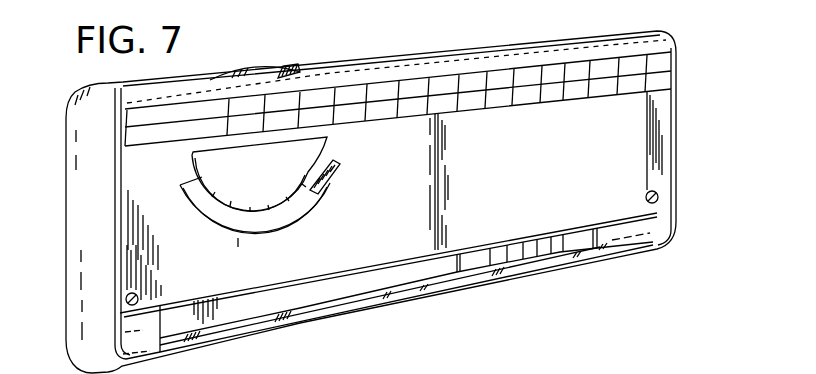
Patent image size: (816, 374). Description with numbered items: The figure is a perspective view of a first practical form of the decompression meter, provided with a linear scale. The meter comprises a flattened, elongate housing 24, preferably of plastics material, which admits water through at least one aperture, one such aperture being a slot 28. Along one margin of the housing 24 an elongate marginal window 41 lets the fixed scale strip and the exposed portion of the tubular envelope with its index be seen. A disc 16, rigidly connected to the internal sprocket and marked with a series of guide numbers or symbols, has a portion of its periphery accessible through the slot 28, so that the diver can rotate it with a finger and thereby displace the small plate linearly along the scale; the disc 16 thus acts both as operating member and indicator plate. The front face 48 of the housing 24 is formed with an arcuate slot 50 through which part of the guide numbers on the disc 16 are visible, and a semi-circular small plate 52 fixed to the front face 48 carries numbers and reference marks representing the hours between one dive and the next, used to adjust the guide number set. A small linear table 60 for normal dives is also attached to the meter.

The disc 16 is at (263, 72).
The housing 24 is at (63, 305).
The slot 28 is at (213, 80).
The elongate marginal window 41 is at (305, 317).
The front face 48 is at (670, 150).
The arcuate slot 50 is at (320, 197).
The semi-circular small plate 52 is at (313, 143).
The small linear table 60 is at (668, 77).